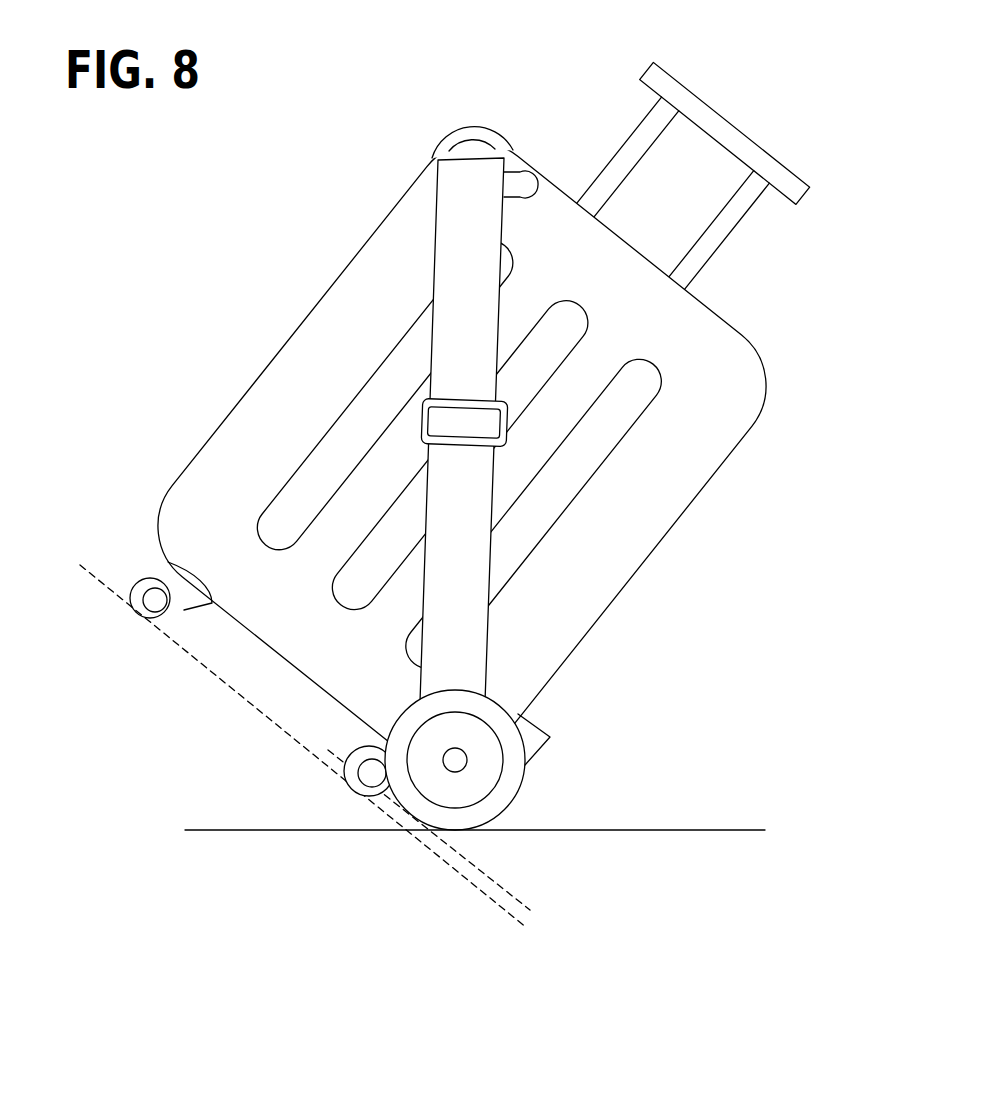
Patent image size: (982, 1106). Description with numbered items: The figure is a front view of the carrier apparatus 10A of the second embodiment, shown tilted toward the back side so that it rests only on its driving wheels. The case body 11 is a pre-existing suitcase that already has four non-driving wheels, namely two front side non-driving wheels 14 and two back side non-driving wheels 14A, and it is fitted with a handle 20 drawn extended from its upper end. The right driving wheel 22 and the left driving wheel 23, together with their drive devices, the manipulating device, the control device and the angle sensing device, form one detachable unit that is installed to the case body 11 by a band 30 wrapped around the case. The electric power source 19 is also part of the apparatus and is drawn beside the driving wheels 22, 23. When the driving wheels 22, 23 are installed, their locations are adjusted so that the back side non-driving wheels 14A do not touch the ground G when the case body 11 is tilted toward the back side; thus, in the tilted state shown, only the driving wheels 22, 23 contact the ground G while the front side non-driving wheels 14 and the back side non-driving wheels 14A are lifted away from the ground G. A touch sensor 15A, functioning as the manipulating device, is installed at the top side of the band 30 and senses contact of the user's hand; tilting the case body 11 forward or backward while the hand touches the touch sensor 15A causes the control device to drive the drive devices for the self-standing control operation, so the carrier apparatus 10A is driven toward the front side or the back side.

The carrier apparatus 10A is at (307, 215).
The case body 11 is at (298, 323).
The front side non-driving wheels 14 is at (160, 565).
The back side non-driving wheels 14A is at (372, 744).
The touch sensor 15A is at (477, 124).
The electric power source 19 is at (542, 723).
The handle 20 is at (737, 122).
The right driving wheel 22 is at (516, 760).
The left driving wheel 23 is at (520, 797).
The band 30 is at (541, 178).
The ground G is at (711, 830).